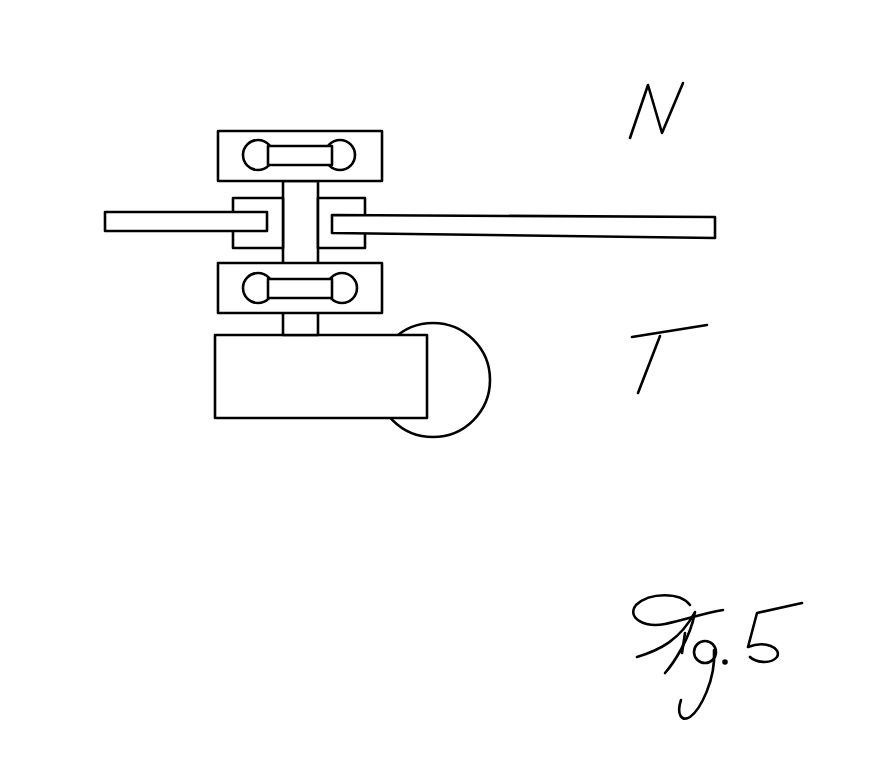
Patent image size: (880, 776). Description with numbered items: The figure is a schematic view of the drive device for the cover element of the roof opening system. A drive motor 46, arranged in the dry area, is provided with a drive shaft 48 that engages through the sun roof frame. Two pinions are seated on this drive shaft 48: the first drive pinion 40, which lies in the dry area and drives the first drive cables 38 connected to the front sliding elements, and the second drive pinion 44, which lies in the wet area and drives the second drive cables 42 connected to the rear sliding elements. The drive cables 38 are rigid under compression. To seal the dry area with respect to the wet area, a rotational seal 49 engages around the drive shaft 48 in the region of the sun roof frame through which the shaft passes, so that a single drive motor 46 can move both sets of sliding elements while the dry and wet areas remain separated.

The first drive cable 38 is at (350, 297).
The first drive pinion 40 is at (297, 290).
The second drive cable 42 is at (352, 153).
The second drive pinion 44 is at (307, 153).
The drive motor 46 is at (287, 403).
The drive shaft 48 is at (308, 259).
The rotational seal 49 is at (250, 199).